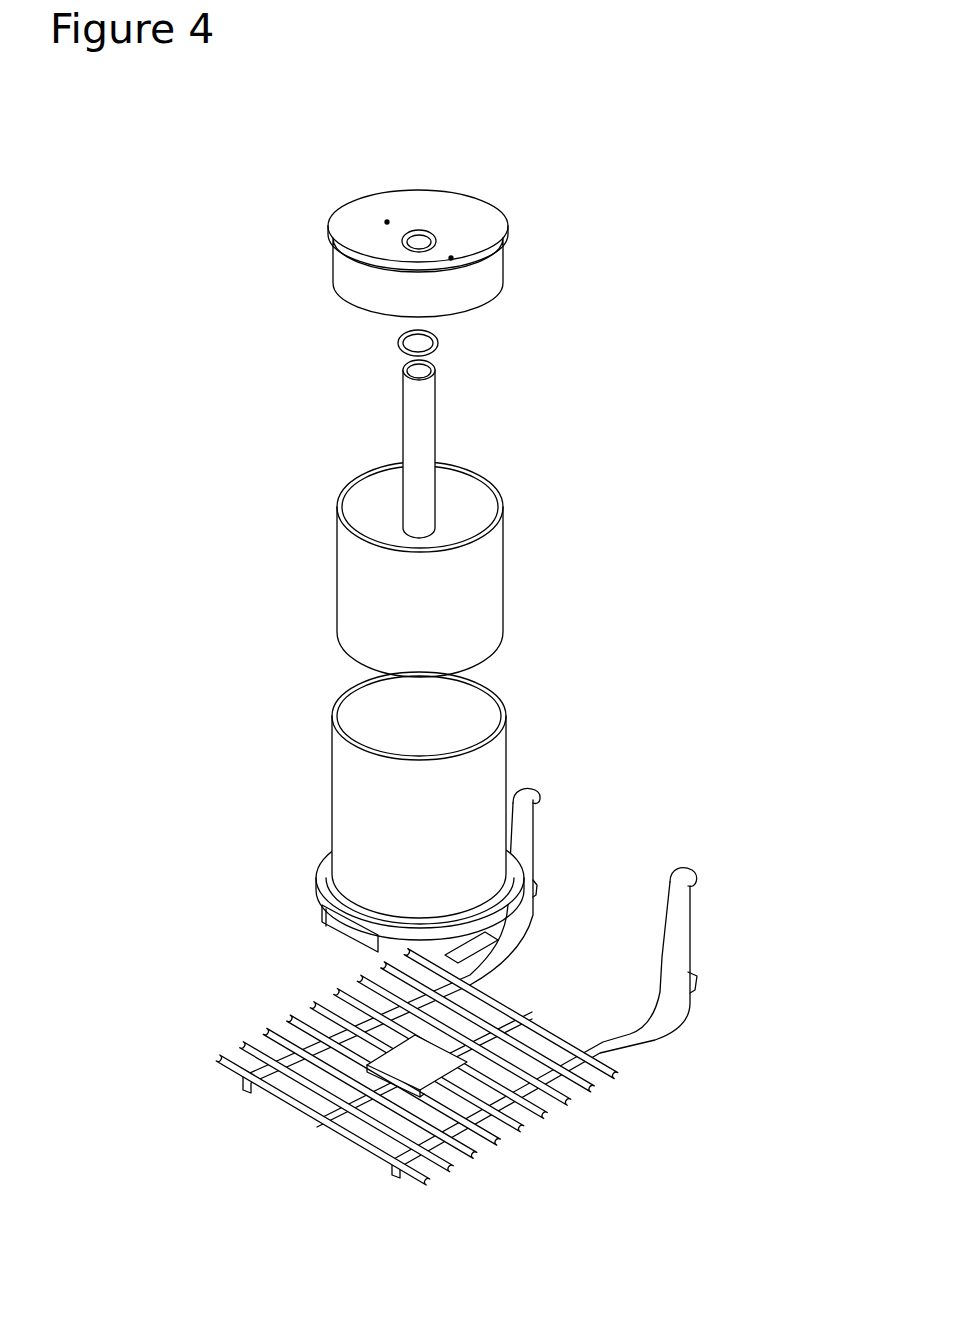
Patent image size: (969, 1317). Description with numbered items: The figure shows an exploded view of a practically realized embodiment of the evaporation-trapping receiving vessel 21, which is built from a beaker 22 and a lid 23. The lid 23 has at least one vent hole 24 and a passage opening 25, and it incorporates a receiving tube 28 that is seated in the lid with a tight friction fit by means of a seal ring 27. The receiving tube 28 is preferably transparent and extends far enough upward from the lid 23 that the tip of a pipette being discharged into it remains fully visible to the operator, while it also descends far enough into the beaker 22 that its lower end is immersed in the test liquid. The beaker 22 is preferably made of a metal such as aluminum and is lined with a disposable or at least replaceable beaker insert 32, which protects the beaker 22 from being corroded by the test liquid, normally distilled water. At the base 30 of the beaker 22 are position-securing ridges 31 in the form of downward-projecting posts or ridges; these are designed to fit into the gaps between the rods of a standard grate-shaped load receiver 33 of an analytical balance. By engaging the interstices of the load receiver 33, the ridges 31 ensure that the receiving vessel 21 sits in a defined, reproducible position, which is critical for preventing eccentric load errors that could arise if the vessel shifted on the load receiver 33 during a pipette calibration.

The receiving vessel 21 is at (200, 557).
The beaker 22 is at (492, 822).
The lid 23 is at (355, 256).
The vent hole 24 is at (451, 257).
The passage opening 25 is at (418, 240).
The seal ring 27 is at (439, 343).
The receiving tube 28 is at (425, 455).
The base 30 is at (322, 882).
The position-securing ridges 31 is at (370, 942).
The beaker insert 32 is at (485, 613).
The grate-shaped load receiver 33 is at (273, 1040).